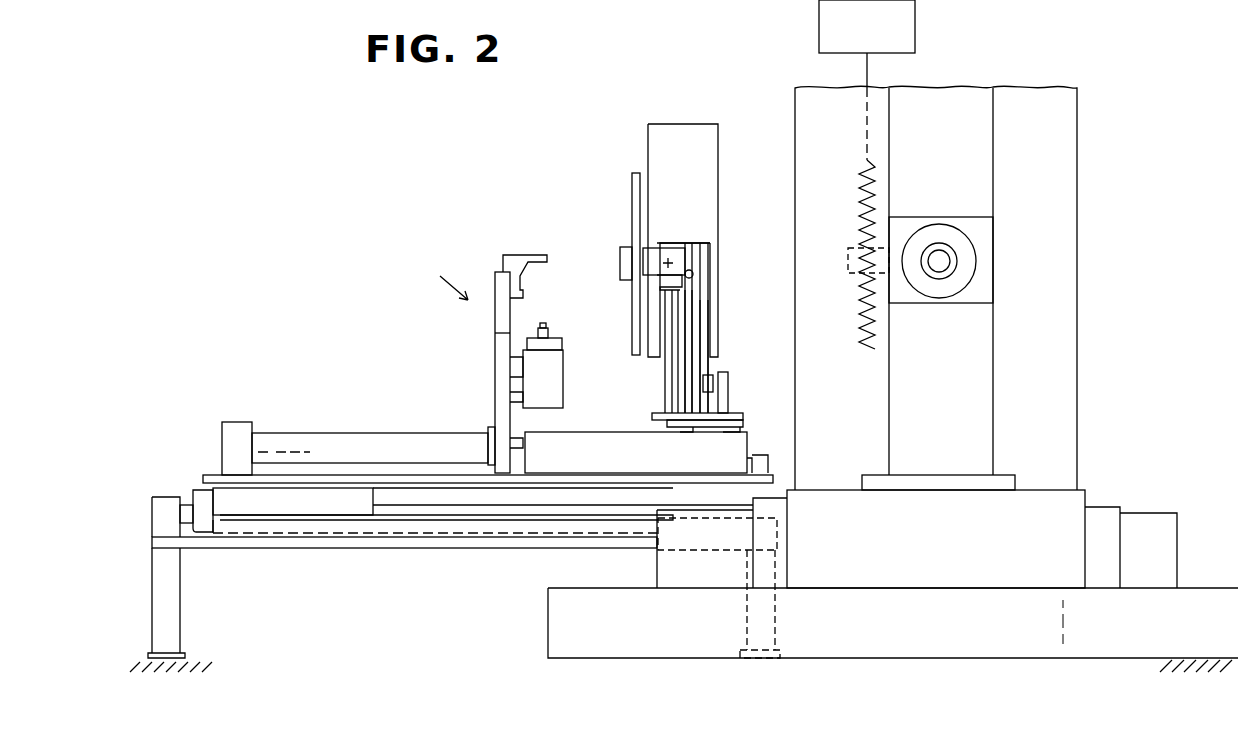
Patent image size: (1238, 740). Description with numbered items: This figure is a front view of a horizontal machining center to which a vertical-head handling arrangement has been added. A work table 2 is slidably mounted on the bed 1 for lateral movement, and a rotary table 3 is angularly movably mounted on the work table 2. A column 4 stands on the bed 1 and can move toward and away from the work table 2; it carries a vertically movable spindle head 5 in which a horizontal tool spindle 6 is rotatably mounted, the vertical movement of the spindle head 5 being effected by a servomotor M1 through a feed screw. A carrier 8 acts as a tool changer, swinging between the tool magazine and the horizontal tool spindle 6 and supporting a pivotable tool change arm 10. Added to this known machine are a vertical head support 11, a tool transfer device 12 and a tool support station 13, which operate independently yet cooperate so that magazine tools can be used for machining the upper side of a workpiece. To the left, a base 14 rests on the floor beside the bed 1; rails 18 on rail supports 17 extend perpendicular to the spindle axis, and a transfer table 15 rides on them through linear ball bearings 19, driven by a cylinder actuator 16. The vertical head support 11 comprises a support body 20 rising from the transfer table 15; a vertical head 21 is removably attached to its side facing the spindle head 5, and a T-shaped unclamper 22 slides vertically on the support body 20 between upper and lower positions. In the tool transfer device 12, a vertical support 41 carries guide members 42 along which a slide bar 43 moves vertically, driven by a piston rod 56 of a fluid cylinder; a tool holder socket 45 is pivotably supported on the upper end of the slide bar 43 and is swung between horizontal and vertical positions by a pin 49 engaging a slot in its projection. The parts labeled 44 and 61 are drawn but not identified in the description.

The bed 1 is at (1013, 643).
The work table 2 is at (1068, 510).
The rotary table 3 is at (995, 462).
The column 4 is at (1068, 128).
The spindle head 5 is at (985, 235).
The horizontal tool spindle 6 is at (955, 262).
The carrier 8 is at (680, 130).
The tool change arm 10 is at (635, 192).
The vertical head support 11 is at (435, 278).
The tool transfer device 12 is at (696, 222).
The tool support station 13 is at (620, 472).
The base 14 is at (256, 546).
The transfer table 15 is at (315, 478).
The cylinder actuator 16 is at (202, 500).
The rail supports 17 is at (376, 526).
The rails 18 is at (455, 513).
The linear ball bearings 19 is at (318, 505).
The support body 20 is at (497, 368).
The vertical head 21 is at (558, 362).
The unclamper 22 is at (518, 255).
The vertical support 41 is at (728, 402).
The guide members 42 is at (712, 382).
The slide bar 43 is at (700, 292).
The guide bar 44 is at (716, 312).
The tool holder socket 45 is at (662, 258).
The pin 49 is at (692, 272).
The piston rod 56 is at (665, 376).
The feed cylinder 61 is at (403, 440).
The servomotor M1 is at (915, 25).